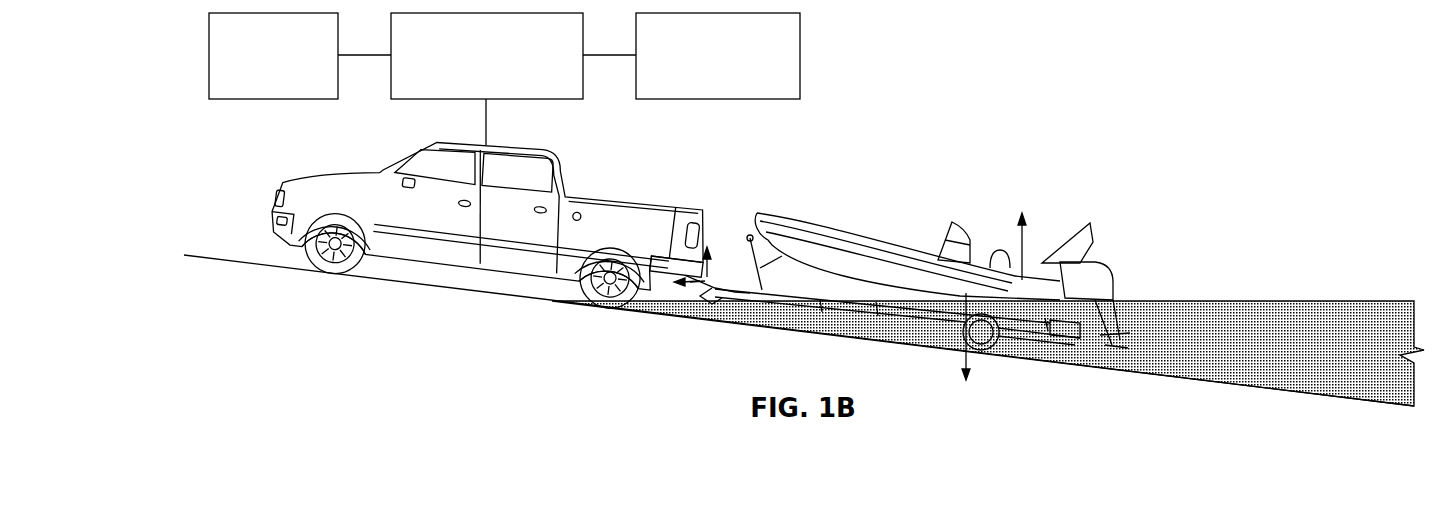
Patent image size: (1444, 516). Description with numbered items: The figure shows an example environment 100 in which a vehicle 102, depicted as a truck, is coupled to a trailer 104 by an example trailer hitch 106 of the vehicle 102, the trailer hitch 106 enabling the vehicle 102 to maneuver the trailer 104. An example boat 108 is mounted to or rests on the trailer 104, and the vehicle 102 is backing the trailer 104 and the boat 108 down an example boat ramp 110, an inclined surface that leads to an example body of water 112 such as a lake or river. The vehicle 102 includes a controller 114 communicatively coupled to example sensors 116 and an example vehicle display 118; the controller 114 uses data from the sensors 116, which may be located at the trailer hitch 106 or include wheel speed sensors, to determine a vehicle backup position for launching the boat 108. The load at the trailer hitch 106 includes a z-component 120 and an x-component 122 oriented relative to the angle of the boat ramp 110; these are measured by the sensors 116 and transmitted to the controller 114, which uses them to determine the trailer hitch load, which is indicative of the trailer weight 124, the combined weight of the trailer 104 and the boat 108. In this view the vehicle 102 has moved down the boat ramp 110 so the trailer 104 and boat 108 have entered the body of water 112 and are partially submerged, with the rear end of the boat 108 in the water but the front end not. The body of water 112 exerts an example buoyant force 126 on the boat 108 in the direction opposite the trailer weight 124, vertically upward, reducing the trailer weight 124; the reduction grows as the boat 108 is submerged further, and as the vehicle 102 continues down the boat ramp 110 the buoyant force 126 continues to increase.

The environment 100 is at (1156, 46).
The vehicle 102 is at (348, 176).
The trailer 104 is at (800, 305).
The trailer hitch 106 is at (712, 288).
The boat 108 is at (872, 240).
The boat ramp 110 is at (403, 283).
The body of water 112 is at (1235, 300).
The controller 114 is at (469, 81).
The sensors 116 is at (255, 81).
The vehicle display 118 is at (700, 96).
The z-component 120 is at (712, 290).
The x-component 122 is at (680, 285).
The trailer weight 124 is at (985, 355).
The buoyant force 126 is at (1026, 232).